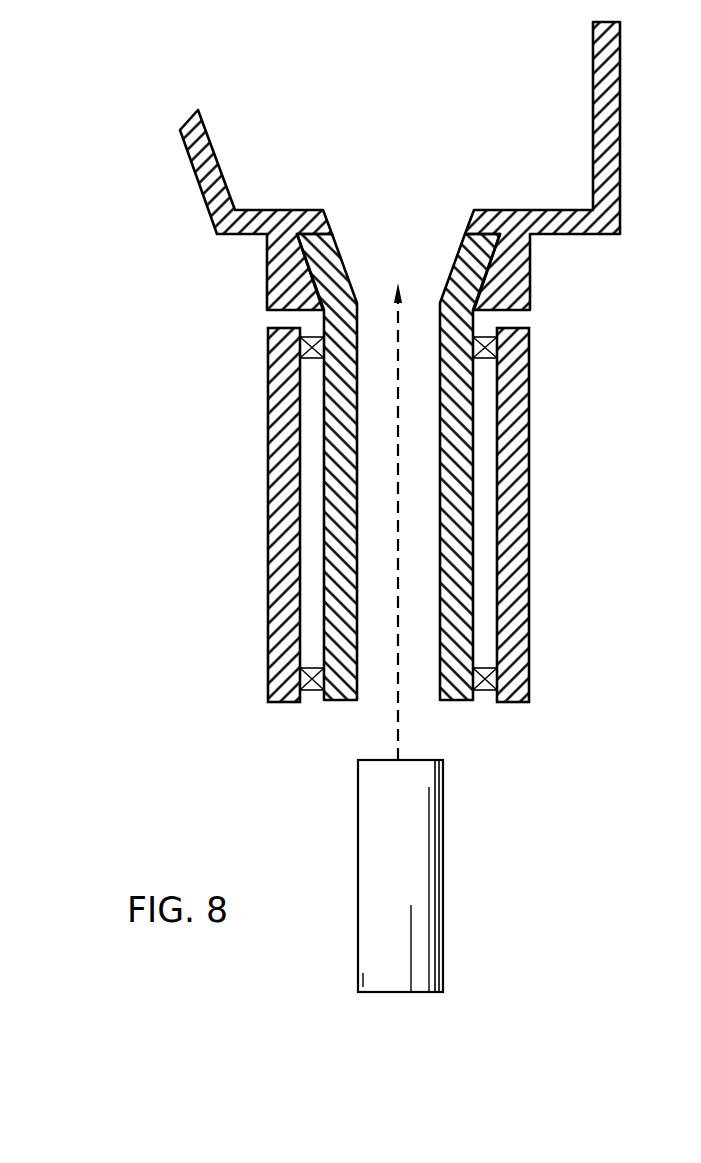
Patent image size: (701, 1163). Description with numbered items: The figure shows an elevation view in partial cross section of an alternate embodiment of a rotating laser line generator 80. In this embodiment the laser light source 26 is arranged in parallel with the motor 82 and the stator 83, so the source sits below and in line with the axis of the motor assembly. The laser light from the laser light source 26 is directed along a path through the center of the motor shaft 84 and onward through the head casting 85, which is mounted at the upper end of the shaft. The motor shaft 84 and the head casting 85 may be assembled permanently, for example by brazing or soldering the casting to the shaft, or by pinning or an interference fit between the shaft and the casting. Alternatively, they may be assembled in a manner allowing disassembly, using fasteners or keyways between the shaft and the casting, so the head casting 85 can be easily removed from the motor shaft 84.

The rotating laser line generator 80 is at (77, 204).
The motor 82 is at (562, 461).
The stator 83 is at (513, 588).
The motor shaft 84 is at (355, 665).
The head casting 85 is at (567, 237).
The laser light source 26 is at (358, 833).